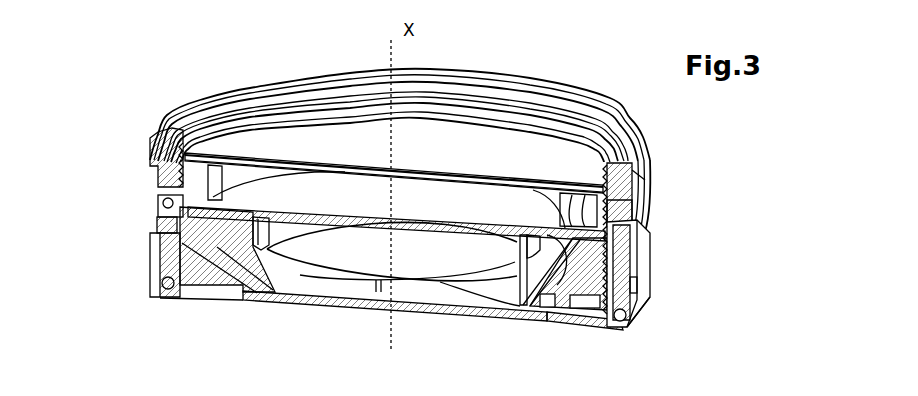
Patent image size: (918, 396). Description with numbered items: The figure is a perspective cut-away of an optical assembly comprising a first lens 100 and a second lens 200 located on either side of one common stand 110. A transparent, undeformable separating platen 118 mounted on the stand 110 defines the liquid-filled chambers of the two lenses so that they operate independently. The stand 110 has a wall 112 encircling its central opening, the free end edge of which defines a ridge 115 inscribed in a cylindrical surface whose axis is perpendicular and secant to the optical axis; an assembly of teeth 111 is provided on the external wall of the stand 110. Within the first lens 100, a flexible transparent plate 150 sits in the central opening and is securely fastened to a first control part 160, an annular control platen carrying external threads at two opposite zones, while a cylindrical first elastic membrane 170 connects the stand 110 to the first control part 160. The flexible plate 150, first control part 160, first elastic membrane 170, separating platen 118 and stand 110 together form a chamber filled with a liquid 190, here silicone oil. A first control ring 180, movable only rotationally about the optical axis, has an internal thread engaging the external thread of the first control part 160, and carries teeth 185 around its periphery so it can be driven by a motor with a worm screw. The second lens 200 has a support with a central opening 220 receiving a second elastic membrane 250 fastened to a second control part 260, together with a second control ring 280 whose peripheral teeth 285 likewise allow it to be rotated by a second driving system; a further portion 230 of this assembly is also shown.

The first lens 100 is at (149, 125).
The stand 110 is at (560, 193).
The assembly of teeth 111 is at (157, 227).
The wall 112 is at (273, 130).
The ridge 115 is at (247, 130).
The separating platen 118 is at (457, 238).
The flexible transparent plate 150 is at (370, 130).
The first control part 160 is at (213, 108).
The first elastic membrane 170 is at (160, 183).
The first control ring 180 is at (620, 207).
The teeth 185 is at (652, 172).
The liquid 190 is at (467, 190).
The second lens 200 is at (680, 282).
The central opening 220 is at (318, 244).
The base plate portion 230 is at (474, 322).
The second elastic membrane 250 is at (373, 306).
The second control part 260 is at (156, 252).
The second control ring 280 is at (640, 303).
The teeth 285 is at (657, 297).